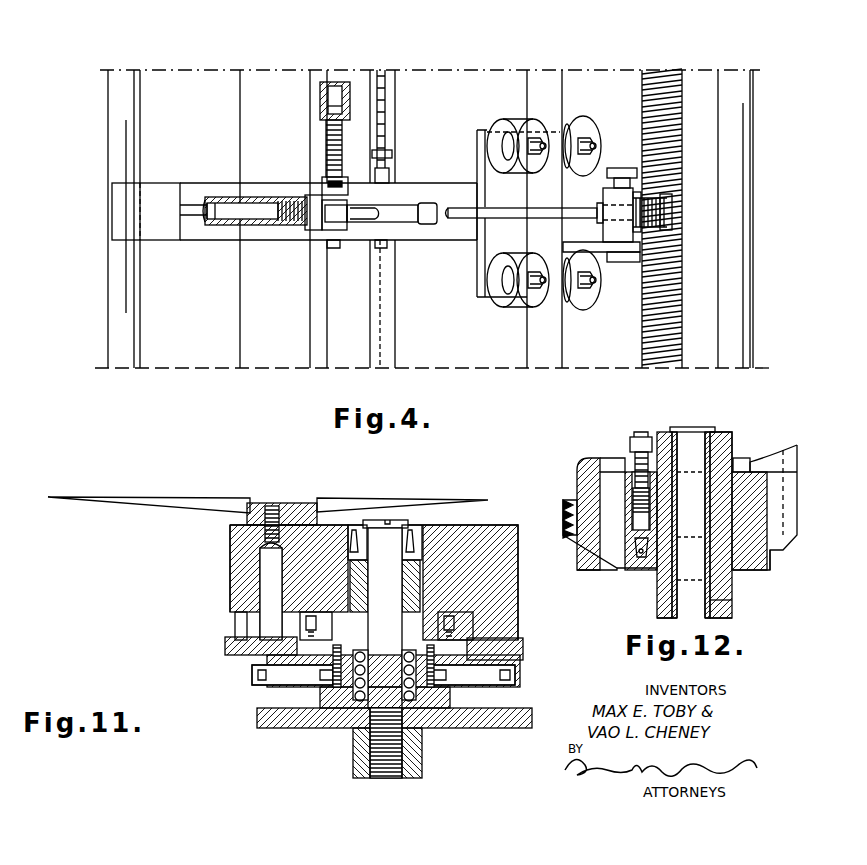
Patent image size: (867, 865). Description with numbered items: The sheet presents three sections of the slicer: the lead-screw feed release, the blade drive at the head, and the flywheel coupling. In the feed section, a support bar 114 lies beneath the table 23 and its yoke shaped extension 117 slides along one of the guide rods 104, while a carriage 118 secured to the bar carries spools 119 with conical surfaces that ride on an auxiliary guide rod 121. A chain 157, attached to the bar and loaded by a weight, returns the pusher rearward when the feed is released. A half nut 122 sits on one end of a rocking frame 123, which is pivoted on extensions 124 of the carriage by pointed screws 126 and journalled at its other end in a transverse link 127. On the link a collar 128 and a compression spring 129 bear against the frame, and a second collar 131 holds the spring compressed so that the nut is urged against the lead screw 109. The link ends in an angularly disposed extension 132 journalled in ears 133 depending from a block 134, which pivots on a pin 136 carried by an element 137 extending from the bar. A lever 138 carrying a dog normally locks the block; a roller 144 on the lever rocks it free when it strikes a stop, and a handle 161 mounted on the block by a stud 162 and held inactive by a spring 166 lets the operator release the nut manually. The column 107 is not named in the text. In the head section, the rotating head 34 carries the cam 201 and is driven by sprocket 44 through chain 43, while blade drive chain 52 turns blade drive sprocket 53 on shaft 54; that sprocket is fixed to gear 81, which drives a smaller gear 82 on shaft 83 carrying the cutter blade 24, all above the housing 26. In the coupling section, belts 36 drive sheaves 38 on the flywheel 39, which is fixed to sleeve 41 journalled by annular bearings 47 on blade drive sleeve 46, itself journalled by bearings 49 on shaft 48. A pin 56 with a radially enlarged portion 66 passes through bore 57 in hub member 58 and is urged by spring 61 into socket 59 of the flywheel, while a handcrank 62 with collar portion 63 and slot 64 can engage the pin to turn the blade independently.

In FIG. 4, the guide rods 104 is at (132, 340).
In FIG. 4, the yoke shaped extension 117 is at (163, 195).
In FIG. 4, the support bar 114 is at (405, 183).
In FIG. 4, the column 107 is at (388, 327).
In FIG. 4, the table 23 is at (375, 350).
In FIG. 4, the chain 157 is at (383, 112).
In FIG. 4, the handle 161 is at (233, 214).
In FIG. 4, the stud 162 is at (207, 230).
In FIG. 4, the spring 166 is at (242, 233).
In FIG. 4, the block 134 is at (313, 226).
In FIG. 4, the ears 133 is at (323, 237).
In FIG. 4, the angularly disposed extension 132 is at (335, 227).
In FIG. 4, the pin 136 is at (322, 180).
In FIG. 4, the element 137 is at (340, 175).
In FIG. 4, the lever 138 is at (400, 213).
In FIG. 4, the roller 144 is at (426, 224).
In FIG. 4, the link 127 is at (500, 210).
In FIG. 4, the auxiliary guide rod 121 is at (527, 86).
In FIG. 4, the spools 119 is at (493, 128).
In FIG. 4, the carriage 118 is at (576, 119).
In FIG. 4, the rocking frame 123 is at (601, 219).
In FIG. 4, the extensions 124 is at (630, 185).
In FIG. 4, the pointed screws 126 is at (625, 262).
In FIG. 4, the second collar 131 is at (596, 228).
In FIG. 4, the collar 128 is at (667, 212).
In FIG. 4, the compression spring 129 is at (668, 228).
In FIG. 4, the half nut 122 is at (641, 200).
In FIG. 4, the lead screw 109 is at (672, 292).
In FIG. 11, the cutter blade 24 is at (151, 502).
In FIG. 11, the rotating head 34 is at (516, 630).
In FIG. 11, the gear 81 is at (470, 620).
In FIG. 11, the shaft 54 is at (395, 593).
In FIG. 11, the shaft 83 is at (263, 579).
In FIG. 11, the gear 82 is at (237, 624).
In FIG. 11, the cam 201 is at (525, 654).
In FIG. 11, the chain 43 is at (262, 683).
In FIG. 11, the sprocket 44 is at (501, 688).
In FIG. 11, the blade drive sprocket 53 is at (335, 692).
In FIG. 11, the housing 26 is at (293, 739).
In FIG. 11, the blade drive chain 52 is at (462, 727).
In FIG. 12, the bearings 49 is at (692, 522).
In FIG. 12, the shaft 48 is at (702, 474).
In FIG. 12, the pin 56 is at (630, 488).
In FIG. 12, the radially enlarged portion 66 is at (637, 478).
In FIG. 12, the bore 57 is at (632, 490).
In FIG. 12, the spring 61 is at (633, 502).
In FIG. 12, the socket 59 is at (640, 560).
In FIG. 12, the combination flywheel and handwheel 39 is at (580, 460).
In FIG. 12, the belts 36 is at (565, 503).
In FIG. 12, the sheaves 38 is at (565, 516).
In FIG. 12, the hub member 58 is at (744, 495).
In FIG. 12, the blade drive sleeve 46 is at (716, 527).
In FIG. 12, the collar portion 63 is at (722, 436).
In FIG. 12, the slot 64 is at (743, 460).
In FIG. 12, the handcrank 62 is at (786, 452).
In FIG. 12, the annular bearings 47 is at (732, 583).
In FIG. 12, the sleeve 41 is at (732, 612).